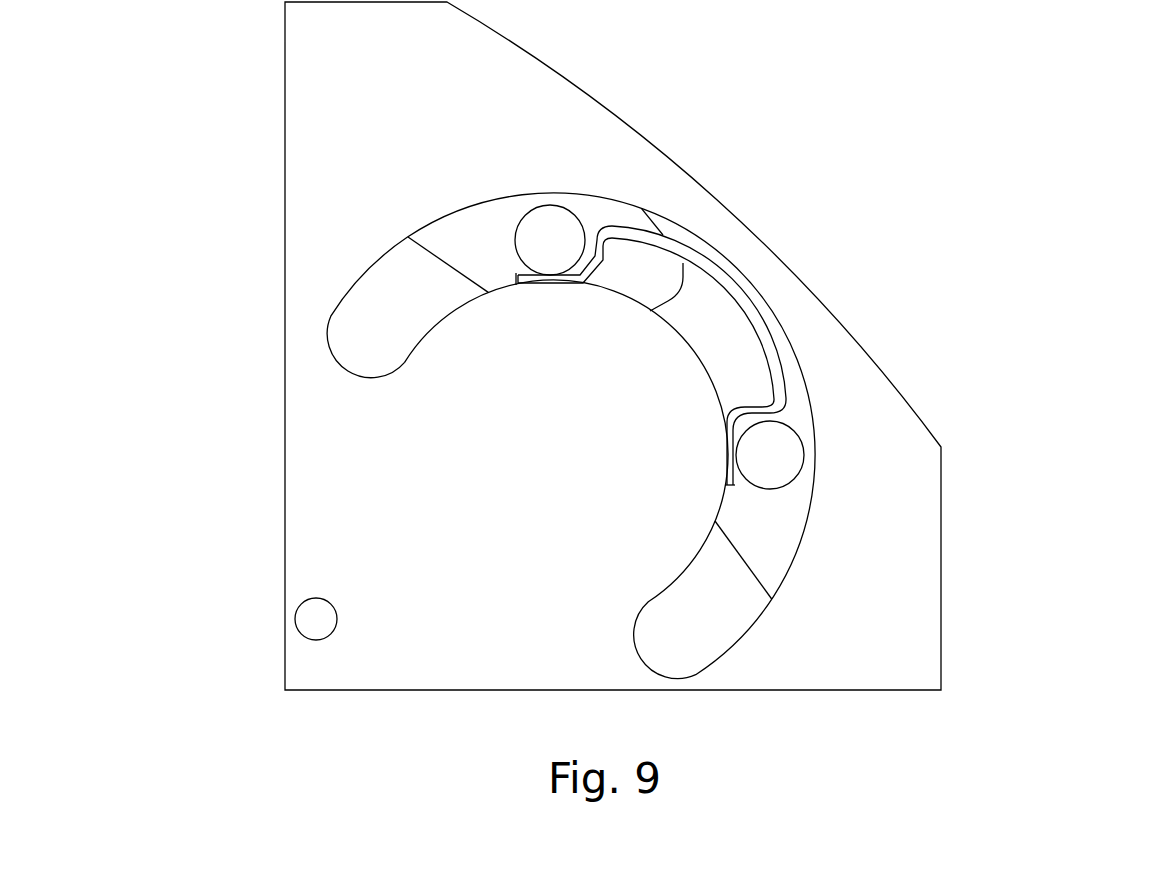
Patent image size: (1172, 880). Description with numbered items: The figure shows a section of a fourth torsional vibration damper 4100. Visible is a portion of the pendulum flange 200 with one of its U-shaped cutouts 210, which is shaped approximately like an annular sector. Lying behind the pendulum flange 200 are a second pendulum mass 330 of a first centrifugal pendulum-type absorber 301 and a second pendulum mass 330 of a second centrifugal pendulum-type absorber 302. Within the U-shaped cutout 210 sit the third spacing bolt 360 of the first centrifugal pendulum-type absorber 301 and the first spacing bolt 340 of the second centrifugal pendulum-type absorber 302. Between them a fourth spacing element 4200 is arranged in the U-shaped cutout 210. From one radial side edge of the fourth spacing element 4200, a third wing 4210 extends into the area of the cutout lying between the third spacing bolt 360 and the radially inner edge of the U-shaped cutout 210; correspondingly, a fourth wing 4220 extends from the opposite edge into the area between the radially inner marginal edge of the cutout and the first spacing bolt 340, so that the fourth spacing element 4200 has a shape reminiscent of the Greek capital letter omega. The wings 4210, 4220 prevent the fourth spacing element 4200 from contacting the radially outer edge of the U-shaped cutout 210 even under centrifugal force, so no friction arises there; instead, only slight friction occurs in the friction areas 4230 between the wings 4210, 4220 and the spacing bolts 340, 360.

The fourth torsional vibration damper 4100 is at (658, 373).
The pendulum flange 200 is at (837, 673).
The U-shaped cutout 210 is at (673, 658).
The first centrifugal pendulum-type absorber 301 is at (440, 248).
The second centrifugal pendulum-type absorber 302 is at (765, 567).
The second pendulum mass 330 is at (619, 405).
The first spacing bolt 340 is at (773, 472).
The third spacing bolt 360 is at (543, 222).
The fourth spacing element 4200 is at (664, 372).
The third wing 4210 is at (578, 277).
The fourth wing 4220 is at (726, 432).
The friction areas 4230 is at (520, 274).